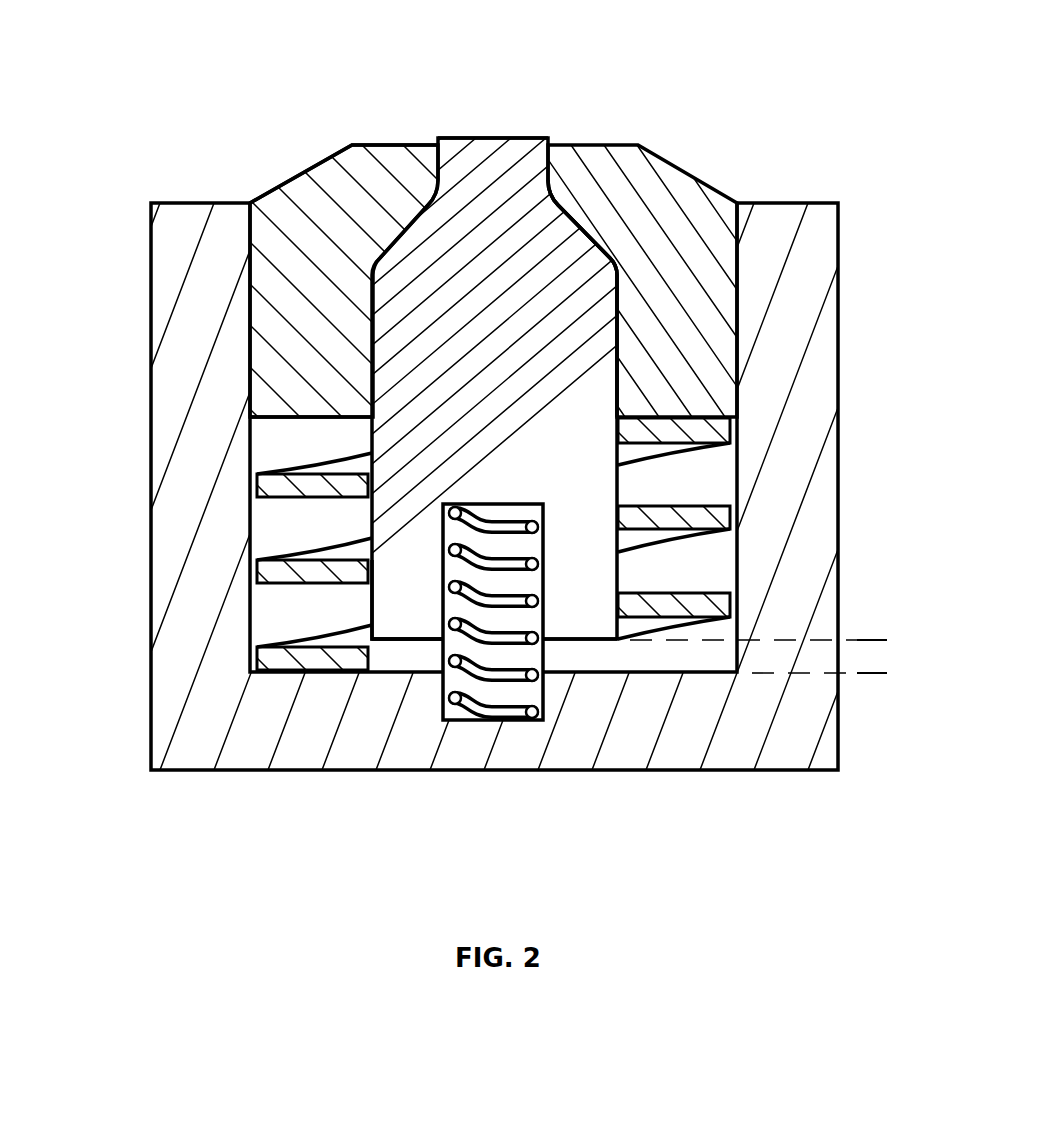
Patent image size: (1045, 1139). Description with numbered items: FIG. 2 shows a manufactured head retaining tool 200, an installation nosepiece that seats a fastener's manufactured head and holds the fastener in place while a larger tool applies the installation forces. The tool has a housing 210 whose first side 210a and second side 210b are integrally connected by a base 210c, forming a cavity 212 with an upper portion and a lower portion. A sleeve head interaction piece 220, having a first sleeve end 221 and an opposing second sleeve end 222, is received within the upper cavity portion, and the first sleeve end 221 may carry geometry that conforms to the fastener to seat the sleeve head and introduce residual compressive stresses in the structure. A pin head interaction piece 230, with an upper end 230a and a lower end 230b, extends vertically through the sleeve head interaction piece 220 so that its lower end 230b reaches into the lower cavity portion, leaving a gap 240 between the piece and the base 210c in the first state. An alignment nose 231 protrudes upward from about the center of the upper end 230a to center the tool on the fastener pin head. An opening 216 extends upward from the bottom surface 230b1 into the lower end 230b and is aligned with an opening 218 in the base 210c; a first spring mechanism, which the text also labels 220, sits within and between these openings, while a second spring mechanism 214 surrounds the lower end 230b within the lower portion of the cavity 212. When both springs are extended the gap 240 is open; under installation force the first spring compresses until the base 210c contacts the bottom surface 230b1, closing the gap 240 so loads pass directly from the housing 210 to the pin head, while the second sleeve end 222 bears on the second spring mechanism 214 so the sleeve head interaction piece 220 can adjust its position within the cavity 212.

The manufactured head retaining tool 200 is at (270, 81).
The housing 210 is at (512, 495).
The first side 210a is at (168, 383).
The second side 210b is at (823, 372).
The base 210c is at (727, 740).
The cavity 212 is at (276, 608).
The second spring mechanism 214 is at (717, 518).
The opening 216 is at (533, 577).
The opening 218 is at (455, 708).
The sleeve head interaction piece 220 is at (677, 186).
The first sleeve end 221 is at (381, 137).
The second sleeve end 222 is at (293, 418).
The pin head interaction piece 230 is at (526, 148).
The upper end 230a is at (597, 293).
The lower end 230b is at (388, 623).
The bottom surface 230b1 is at (424, 641).
The alignment nose 231 is at (502, 125).
The gap 240 is at (880, 723).